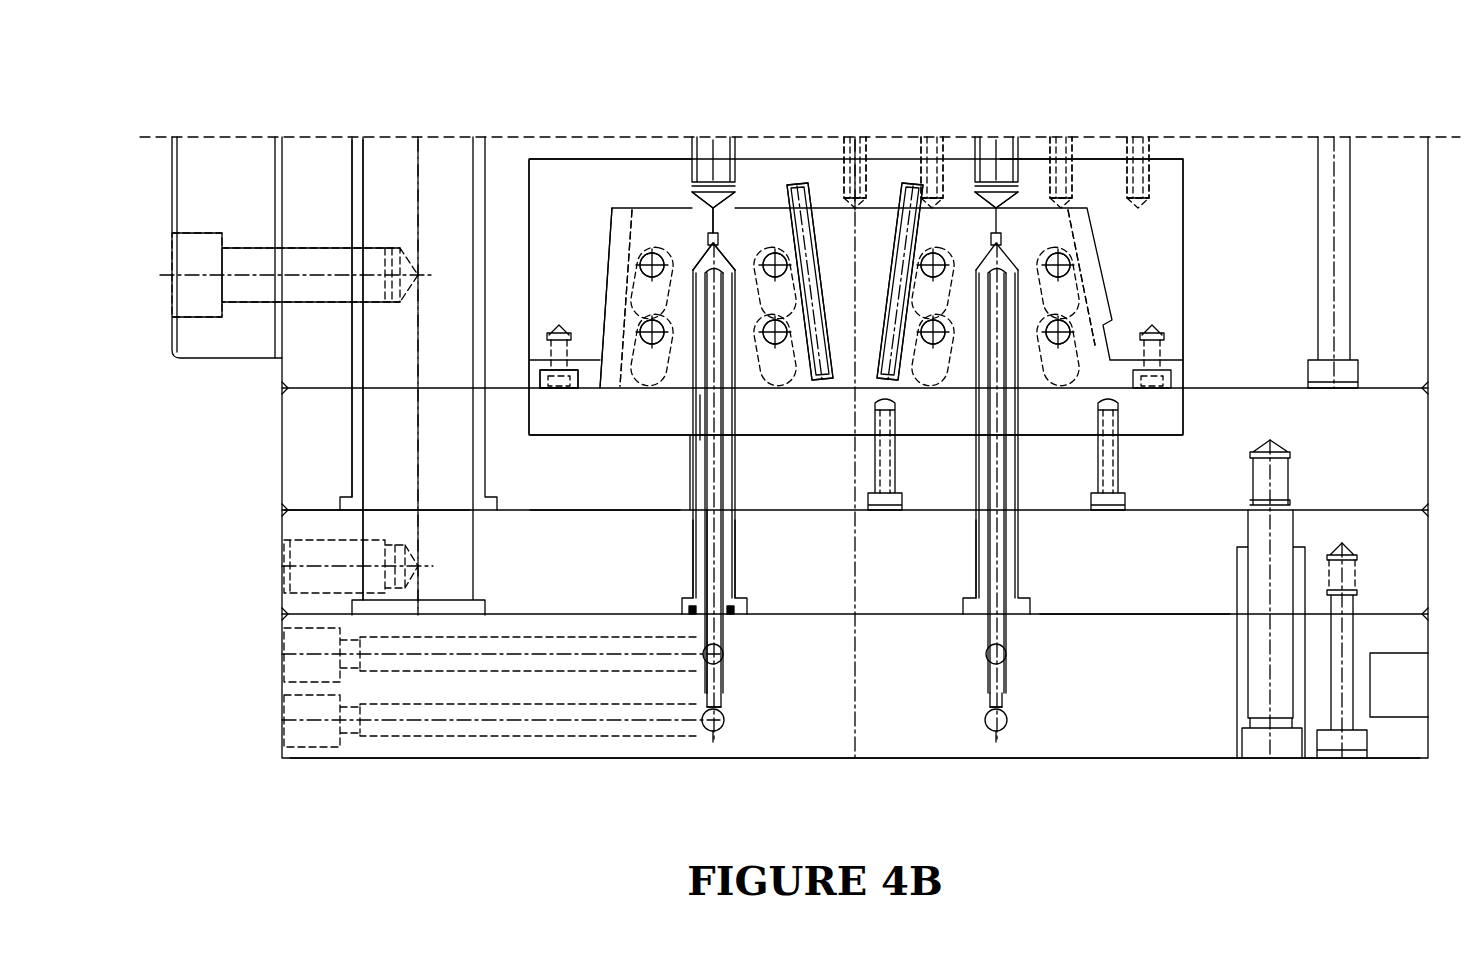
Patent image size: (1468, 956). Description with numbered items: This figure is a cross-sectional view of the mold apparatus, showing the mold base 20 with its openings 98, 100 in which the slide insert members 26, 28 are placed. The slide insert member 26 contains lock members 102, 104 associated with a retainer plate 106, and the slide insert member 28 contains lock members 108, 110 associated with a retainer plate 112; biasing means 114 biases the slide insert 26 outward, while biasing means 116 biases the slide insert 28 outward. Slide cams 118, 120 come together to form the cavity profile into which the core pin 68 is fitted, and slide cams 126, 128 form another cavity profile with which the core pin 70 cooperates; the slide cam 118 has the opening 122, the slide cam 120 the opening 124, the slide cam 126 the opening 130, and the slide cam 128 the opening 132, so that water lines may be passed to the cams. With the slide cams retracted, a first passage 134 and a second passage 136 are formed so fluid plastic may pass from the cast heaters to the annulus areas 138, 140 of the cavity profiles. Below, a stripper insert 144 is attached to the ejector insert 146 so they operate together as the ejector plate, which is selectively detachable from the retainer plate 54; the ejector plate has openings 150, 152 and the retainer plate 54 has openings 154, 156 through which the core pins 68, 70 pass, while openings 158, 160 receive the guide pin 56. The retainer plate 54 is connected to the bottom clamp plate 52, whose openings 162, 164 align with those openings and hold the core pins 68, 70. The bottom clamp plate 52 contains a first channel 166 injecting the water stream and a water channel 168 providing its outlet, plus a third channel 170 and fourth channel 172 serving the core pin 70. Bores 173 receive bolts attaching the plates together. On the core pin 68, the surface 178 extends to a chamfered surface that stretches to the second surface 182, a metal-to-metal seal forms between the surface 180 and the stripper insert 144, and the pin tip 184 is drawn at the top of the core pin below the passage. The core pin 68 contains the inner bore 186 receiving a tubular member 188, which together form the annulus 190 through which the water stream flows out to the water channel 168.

The mold base 20 is at (1237, 147).
The slide insert member 26 is at (612, 355).
The slide insert member 28 is at (900, 395).
The bottom clamp plate 52 is at (835, 707).
The retainer plate 54 is at (1135, 584).
The guide pin 56 is at (373, 435).
The core pin 68 is at (728, 440).
The core pin 70 is at (1013, 437).
The opening 98 is at (548, 235).
The opening 100 is at (1172, 200).
The lock member 102 is at (565, 180).
The lock member 104 is at (835, 178).
The retainer plate 106 is at (665, 183).
The lock member 108 is at (895, 180).
The lock member 110 is at (1172, 250).
The retainer plate 112 is at (1083, 165).
The biasing means 114 is at (785, 195).
The biasing means 116 is at (880, 172).
The slide cam 118 is at (620, 215).
The slide cam 120 is at (767, 215).
The opening 122 is at (627, 290).
The opening 124 is at (767, 292).
The slide cam 126 is at (962, 215).
The slide cam 128 is at (1037, 200).
The opening 130 is at (943, 292).
The opening 132 is at (1057, 292).
The first passage 134 is at (672, 215).
The second passage 136 is at (968, 200).
The annulus area 138 is at (730, 358).
The annulus area 140 is at (1013, 362).
The stripper insert 144 is at (577, 422).
The ejector insert 146 is at (582, 493).
The opening 150 is at (690, 440).
The opening 152 is at (972, 473).
The opening 154 is at (740, 558).
The opening 156 is at (970, 555).
The opening 158 is at (363, 527).
The opening 160 is at (363, 457).
The opening 162 is at (727, 627).
The opening 164 is at (987, 623).
The first channel 166 is at (713, 737).
The water channel 168 is at (697, 660).
The third channel 170 is at (987, 722).
The fourth channel 172 is at (1007, 652).
The bore 173 is at (1253, 755).
The surface 178 is at (694, 584).
The surface 180 is at (702, 413).
The second surface 182 is at (693, 377).
The pin tip 184 is at (693, 292).
The inner bore 186 is at (713, 537).
The tubular member 188 is at (723, 527).
The annulus 190 is at (705, 468).